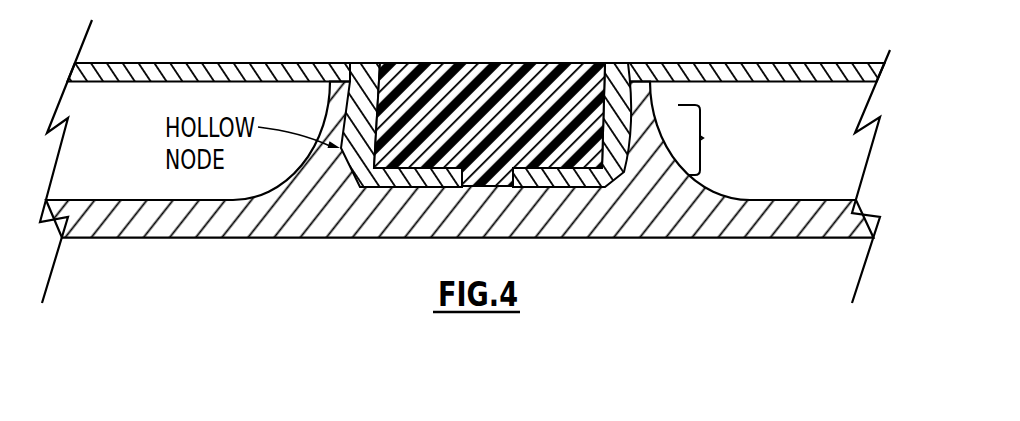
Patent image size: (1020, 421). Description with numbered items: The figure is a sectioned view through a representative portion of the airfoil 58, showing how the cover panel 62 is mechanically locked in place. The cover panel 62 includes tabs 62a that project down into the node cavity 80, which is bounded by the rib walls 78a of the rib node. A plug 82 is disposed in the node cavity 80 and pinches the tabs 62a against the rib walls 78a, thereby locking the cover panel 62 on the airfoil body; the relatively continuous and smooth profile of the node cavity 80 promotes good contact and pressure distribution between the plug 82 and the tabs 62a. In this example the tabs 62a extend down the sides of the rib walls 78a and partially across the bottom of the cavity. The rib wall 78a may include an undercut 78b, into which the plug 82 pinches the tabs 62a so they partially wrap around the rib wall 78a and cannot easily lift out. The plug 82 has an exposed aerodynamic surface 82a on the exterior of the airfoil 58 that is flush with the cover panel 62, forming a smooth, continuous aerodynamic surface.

The airfoil 58 is at (123, 263).
The cover panel 62 is at (698, 63).
The tabs 62a is at (352, 168).
The rib wall 78a is at (667, 104).
The undercut 78b is at (702, 138).
The node cavity 80 is at (466, 108).
The plug 82 is at (508, 92).
The exposed surface 82a is at (575, 63).